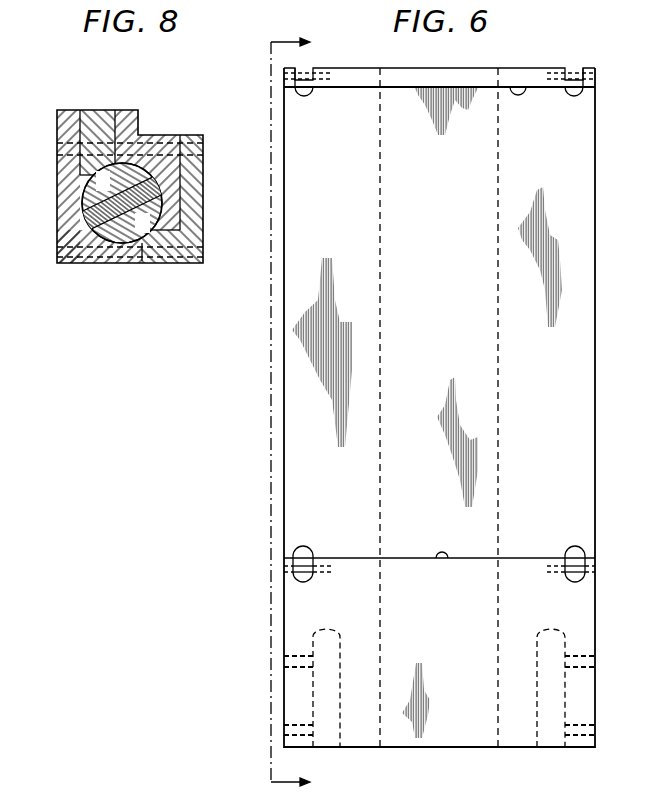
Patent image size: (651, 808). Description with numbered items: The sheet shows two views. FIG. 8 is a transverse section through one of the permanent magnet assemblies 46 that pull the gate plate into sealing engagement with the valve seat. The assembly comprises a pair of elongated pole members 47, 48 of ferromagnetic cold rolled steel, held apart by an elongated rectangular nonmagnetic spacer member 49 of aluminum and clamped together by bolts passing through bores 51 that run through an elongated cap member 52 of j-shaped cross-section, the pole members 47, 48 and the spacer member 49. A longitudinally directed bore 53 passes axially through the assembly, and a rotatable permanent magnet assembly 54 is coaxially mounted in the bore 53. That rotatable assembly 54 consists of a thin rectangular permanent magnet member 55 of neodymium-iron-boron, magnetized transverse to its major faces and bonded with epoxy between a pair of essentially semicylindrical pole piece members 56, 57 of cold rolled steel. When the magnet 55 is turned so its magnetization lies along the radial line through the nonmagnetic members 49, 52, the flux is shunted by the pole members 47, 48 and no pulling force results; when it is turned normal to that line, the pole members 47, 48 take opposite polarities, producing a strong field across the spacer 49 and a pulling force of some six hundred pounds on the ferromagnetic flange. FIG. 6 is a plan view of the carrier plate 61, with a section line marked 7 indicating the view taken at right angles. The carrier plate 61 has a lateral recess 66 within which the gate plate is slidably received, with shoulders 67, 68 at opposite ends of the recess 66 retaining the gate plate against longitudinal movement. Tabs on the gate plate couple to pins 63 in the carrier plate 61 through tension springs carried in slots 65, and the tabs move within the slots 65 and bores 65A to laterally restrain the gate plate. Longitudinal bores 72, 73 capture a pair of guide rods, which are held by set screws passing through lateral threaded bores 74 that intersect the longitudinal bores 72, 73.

In FIG. 8, the permanent magnet assembly 46 is at (157, 106).
In FIG. 8, the pole member 47 is at (58, 143).
In FIG. 8, the pole member 48 is at (166, 135).
In FIG. 8, the spacer member 49 is at (97, 110).
In FIG. 8, the bores 51 is at (143, 134).
In FIG. 8, the cap member 52 is at (183, 210).
In FIG. 8, the bore 53 is at (86, 213).
In FIG. 8, the permanent magnet assembly 54 is at (100, 201).
In FIG. 8, the permanent magnet member 55 is at (103, 243).
In FIG. 8, the pole piece member 56 is at (164, 200).
In FIG. 8, the pole piece member 57 is at (100, 193).
In FIG. 6, the section line 7- 7 is at (299, 414).
In FIG. 6, the carrier plate 61 is at (596, 215).
In FIG. 6, the pins 63 is at (297, 92).
In FIG. 6, the slots 65 is at (307, 96).
In FIG. 6, the bores 65A is at (300, 550).
In FIG. 6, the recess 66 is at (449, 274).
In FIG. 6, the shoulder 67 is at (523, 85).
In FIG. 6, the shoulder 68 is at (448, 560).
In FIG. 6, the longitudinal bore 72 is at (538, 728).
In FIG. 6, the longitudinal bore 73 is at (338, 733).
In FIG. 6, the threaded bores 74 is at (292, 655).